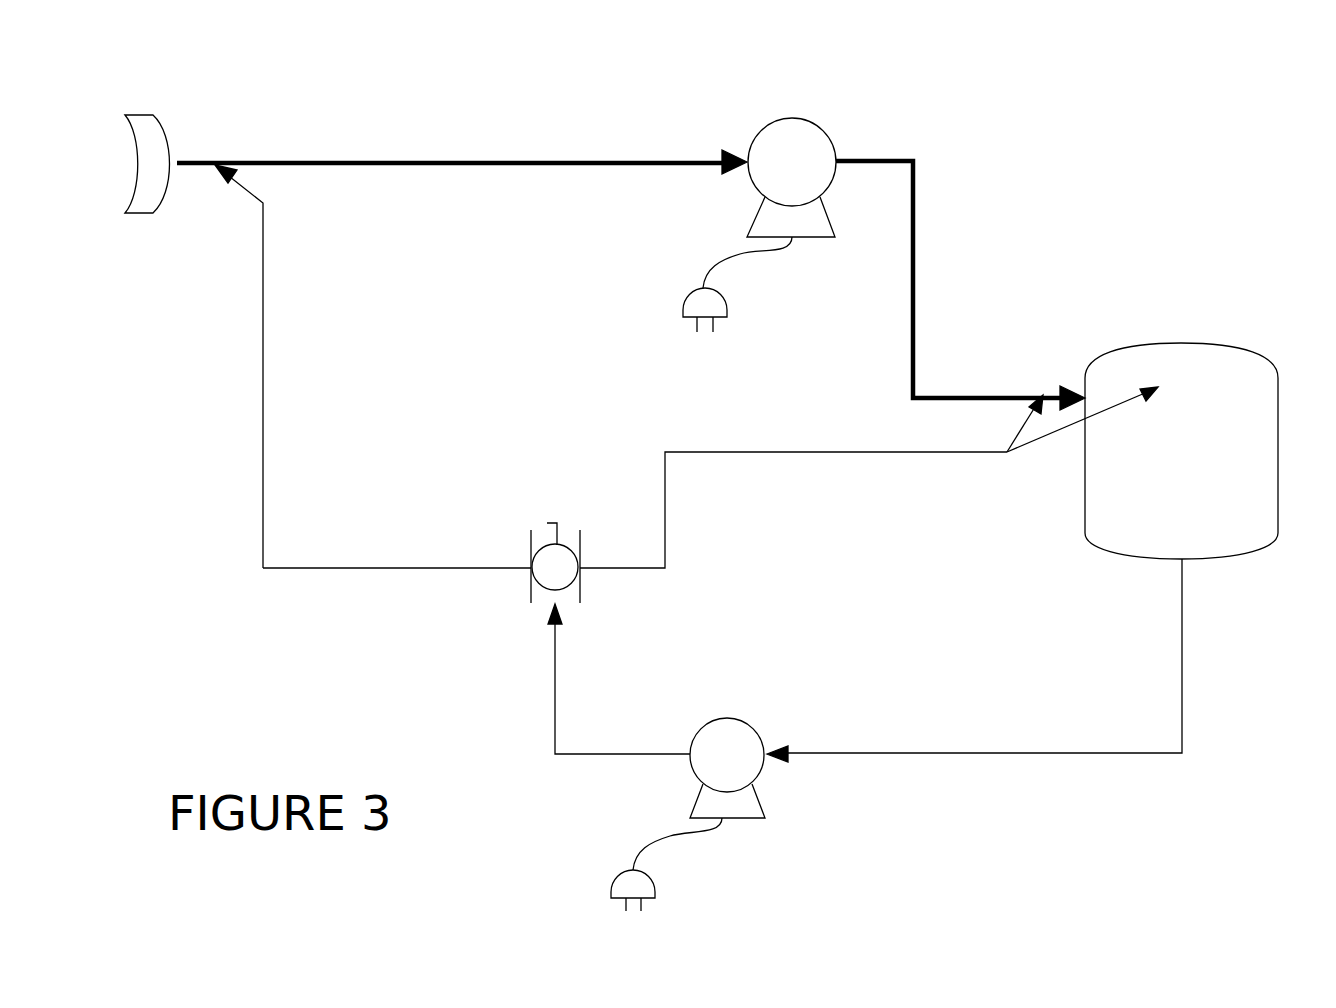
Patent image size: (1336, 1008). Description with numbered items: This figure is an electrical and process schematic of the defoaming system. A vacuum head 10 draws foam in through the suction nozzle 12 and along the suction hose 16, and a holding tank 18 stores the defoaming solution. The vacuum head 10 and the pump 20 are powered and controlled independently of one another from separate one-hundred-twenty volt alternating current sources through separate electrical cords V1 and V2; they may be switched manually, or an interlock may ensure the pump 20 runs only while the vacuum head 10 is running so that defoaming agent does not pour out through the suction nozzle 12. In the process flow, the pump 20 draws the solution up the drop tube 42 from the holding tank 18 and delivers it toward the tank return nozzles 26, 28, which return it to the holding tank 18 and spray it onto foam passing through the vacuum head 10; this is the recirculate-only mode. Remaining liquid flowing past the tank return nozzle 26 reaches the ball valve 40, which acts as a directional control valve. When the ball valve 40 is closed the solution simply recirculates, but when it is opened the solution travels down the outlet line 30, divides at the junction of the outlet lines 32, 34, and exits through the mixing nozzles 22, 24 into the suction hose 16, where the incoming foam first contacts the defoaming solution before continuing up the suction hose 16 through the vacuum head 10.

The vacuum head 10 is at (817, 135).
The suction nozzle 12 is at (177, 115).
The suction hose 16 is at (352, 160).
The holding tank 18 is at (1245, 365).
The pump 20 is at (753, 745).
The mixing nozzle 22 is at (203, 366).
The mixing nozzle 24 is at (238, 188).
The tank return nozzle 26 is at (1038, 454).
The tank return nozzle 28 is at (1058, 445).
The outlet line 30 is at (566, 510).
The outlet line 32 is at (566, 510).
The outlet line 34 is at (257, 530).
The ball valve 40 is at (518, 543).
The drop tube 42 is at (980, 755).
The electrical cord V1 is at (717, 248).
The electrical cord V2 is at (647, 840).